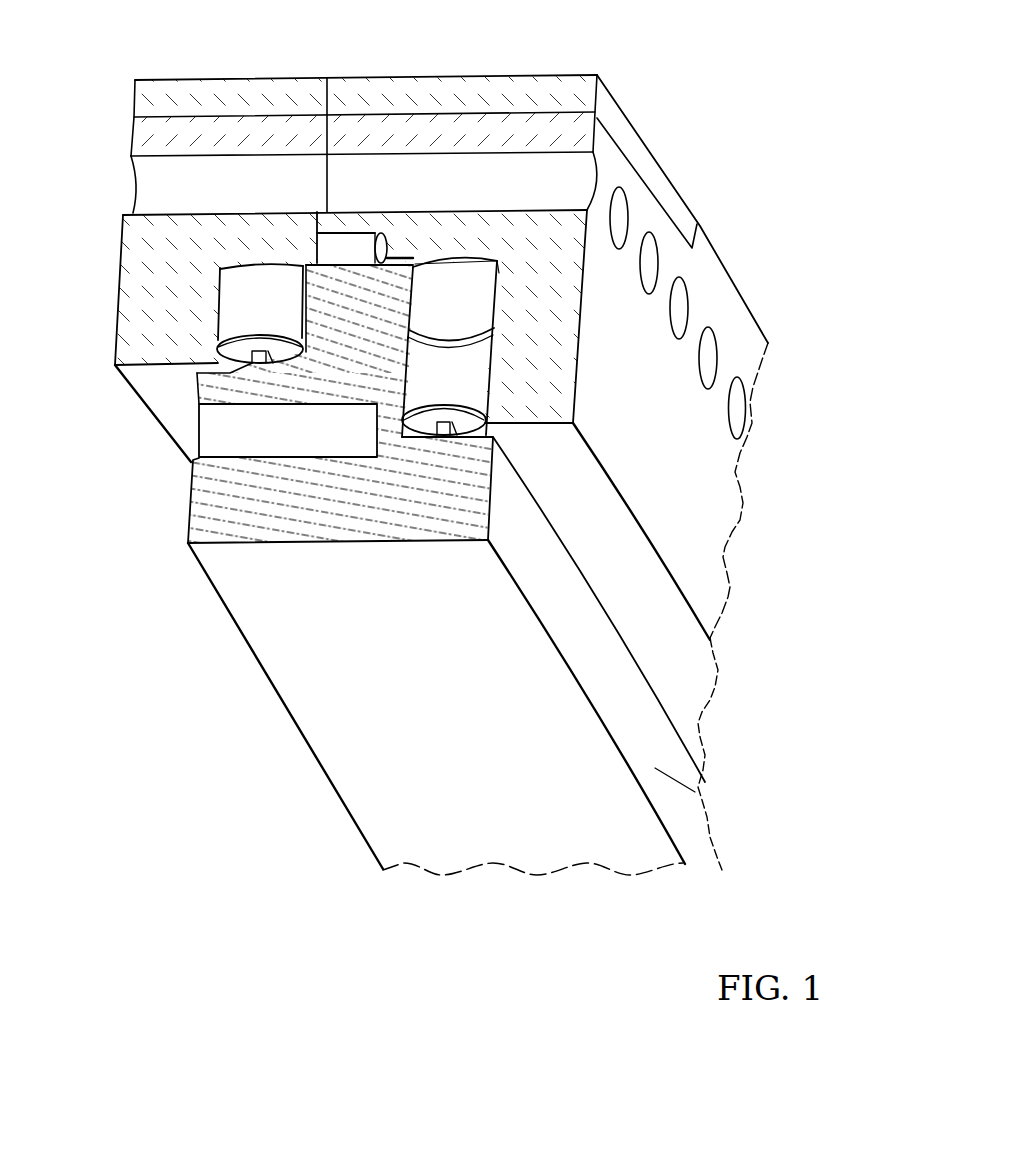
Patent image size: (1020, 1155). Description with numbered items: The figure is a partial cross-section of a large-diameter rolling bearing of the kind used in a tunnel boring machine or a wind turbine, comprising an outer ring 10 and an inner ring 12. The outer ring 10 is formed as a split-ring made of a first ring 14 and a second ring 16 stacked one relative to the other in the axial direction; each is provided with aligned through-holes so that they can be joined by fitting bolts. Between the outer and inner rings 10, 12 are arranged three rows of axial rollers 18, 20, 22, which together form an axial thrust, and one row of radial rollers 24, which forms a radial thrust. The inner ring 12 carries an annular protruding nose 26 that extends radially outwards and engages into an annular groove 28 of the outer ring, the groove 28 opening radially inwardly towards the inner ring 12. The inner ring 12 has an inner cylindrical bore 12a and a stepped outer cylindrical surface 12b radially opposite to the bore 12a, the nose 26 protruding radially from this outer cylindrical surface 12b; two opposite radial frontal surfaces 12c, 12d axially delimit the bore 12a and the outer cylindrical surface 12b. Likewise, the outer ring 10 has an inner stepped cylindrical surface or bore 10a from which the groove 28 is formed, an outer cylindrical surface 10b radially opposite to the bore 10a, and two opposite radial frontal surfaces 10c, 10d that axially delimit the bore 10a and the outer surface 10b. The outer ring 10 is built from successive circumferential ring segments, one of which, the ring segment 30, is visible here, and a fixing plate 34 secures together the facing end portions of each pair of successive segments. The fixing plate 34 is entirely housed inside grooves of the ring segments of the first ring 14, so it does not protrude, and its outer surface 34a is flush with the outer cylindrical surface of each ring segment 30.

The outer ring 10 is at (760, 232).
The inner stepped cylindrical surface or bore 10a is at (157, 392).
The outer cylindrical surface 10b is at (718, 247).
The radial frontal surface 10c is at (123, 292).
The radial frontal surface 10d is at (718, 528).
The inner ring 12 is at (511, 903).
The inner cylindrical bore 12a is at (380, 826).
The stepped outer cylindrical surface 12b is at (217, 370).
The radial frontal surface 12c is at (187, 500).
The radial frontal surface 12d is at (722, 766).
The first ring 14 is at (458, 64).
The second ring 16 is at (222, 70).
The axial rollers 18 is at (432, 307).
The axial rollers 20 is at (428, 383).
The axial rollers 22 is at (245, 311).
The radial rollers 24 is at (332, 260).
The annular protruding nose 26 is at (353, 332).
The annular groove 28 is at (472, 267).
The ring segment 30 is at (741, 313).
The fixing plate 34 is at (385, 86).
The outer surface 34a is at (650, 143).